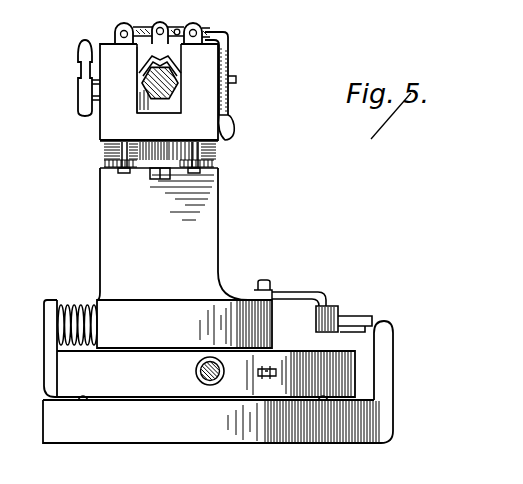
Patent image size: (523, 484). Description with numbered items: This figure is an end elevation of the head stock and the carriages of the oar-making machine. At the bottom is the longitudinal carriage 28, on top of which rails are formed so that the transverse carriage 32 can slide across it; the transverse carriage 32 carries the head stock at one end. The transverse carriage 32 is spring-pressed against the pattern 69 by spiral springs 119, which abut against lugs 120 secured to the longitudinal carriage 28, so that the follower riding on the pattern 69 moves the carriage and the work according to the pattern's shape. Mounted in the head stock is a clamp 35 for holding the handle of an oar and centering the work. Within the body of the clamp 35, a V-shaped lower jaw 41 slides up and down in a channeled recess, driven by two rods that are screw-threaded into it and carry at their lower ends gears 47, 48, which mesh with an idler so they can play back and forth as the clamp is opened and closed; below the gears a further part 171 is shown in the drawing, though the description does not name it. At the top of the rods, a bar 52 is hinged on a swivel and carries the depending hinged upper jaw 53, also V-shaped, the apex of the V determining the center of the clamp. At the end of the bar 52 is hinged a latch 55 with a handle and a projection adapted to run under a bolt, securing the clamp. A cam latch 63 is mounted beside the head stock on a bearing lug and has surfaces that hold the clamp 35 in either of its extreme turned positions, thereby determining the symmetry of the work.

The longitudinal carriage 28 is at (206, 374).
The transverse carriage 32 is at (184, 314).
The clamp 35 is at (159, 92).
The lower jaw 41 is at (138, 105).
The gear 47 is at (107, 168).
The gear 48 is at (221, 172).
The bar 52 is at (165, 25).
The upper jaw 53 is at (160, 58).
The latch 55 is at (229, 50).
The cam latch 63 is at (79, 54).
The pattern 69 is at (358, 314).
The spiral spring 119 is at (77, 302).
The lug 120 is at (44, 333).
The nut 171 is at (160, 181).